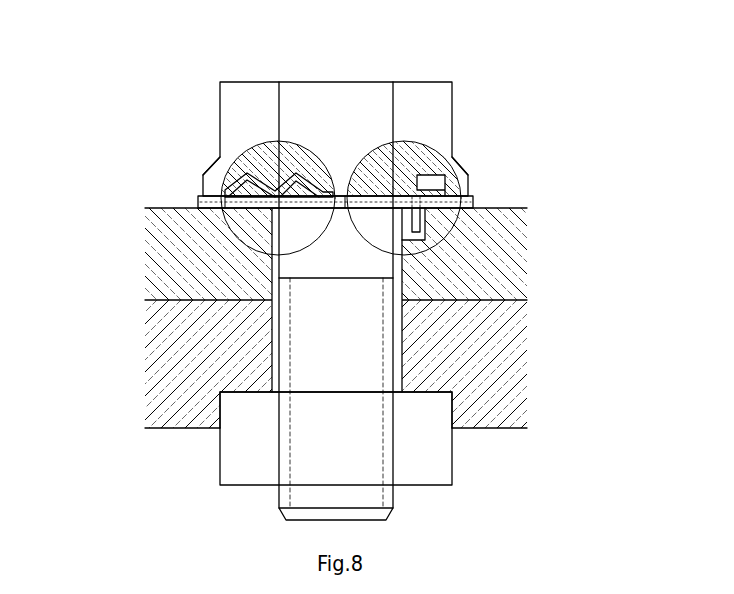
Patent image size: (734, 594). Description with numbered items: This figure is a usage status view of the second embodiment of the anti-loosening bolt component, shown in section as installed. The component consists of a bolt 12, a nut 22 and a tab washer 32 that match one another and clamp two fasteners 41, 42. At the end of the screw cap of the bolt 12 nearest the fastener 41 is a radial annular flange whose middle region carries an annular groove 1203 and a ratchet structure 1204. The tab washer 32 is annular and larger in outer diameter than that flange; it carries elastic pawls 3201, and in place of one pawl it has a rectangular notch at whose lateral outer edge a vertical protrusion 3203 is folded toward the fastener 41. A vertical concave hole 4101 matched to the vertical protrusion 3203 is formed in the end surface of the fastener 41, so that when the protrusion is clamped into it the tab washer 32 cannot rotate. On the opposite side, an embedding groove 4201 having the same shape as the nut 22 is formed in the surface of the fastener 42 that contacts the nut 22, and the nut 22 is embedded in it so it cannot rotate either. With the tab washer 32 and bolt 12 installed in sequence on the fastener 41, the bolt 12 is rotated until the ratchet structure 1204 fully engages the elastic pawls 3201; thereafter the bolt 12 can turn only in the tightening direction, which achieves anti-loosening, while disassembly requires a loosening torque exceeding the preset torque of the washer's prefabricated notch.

The bolt 12 is at (432, 122).
The ratchet structure 1204 is at (240, 158).
The annular groove 1203 is at (466, 188).
The elastic pawl 3201 is at (236, 186).
The tab washer 32 is at (200, 200).
The vertical protrusion 3203 is at (425, 219).
The fastener 41 is at (183, 248).
The vertical concave hole 4101 is at (440, 246).
The fastener 42 is at (197, 347).
The embedding groove 4201 is at (456, 406).
The nut 22 is at (255, 438).